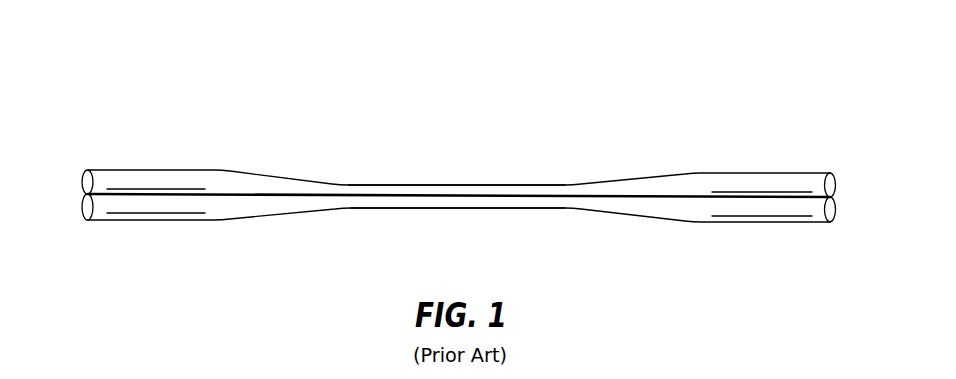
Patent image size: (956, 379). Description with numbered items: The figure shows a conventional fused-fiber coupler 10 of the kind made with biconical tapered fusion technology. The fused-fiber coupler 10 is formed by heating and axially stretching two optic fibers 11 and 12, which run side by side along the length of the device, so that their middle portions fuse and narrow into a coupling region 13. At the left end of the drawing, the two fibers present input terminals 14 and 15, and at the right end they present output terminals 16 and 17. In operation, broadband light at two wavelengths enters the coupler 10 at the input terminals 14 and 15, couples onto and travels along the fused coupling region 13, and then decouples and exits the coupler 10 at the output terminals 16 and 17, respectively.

The fused-fiber coupler 10 is at (203, 87).
The optic fiber 11 is at (259, 180).
The optic fiber 12 is at (263, 210).
The coupling region 13 is at (410, 186).
The input terminal 14 is at (83, 180).
The input terminal 15 is at (83, 210).
The output terminal 16 is at (835, 182).
The output terminal 17 is at (835, 215).